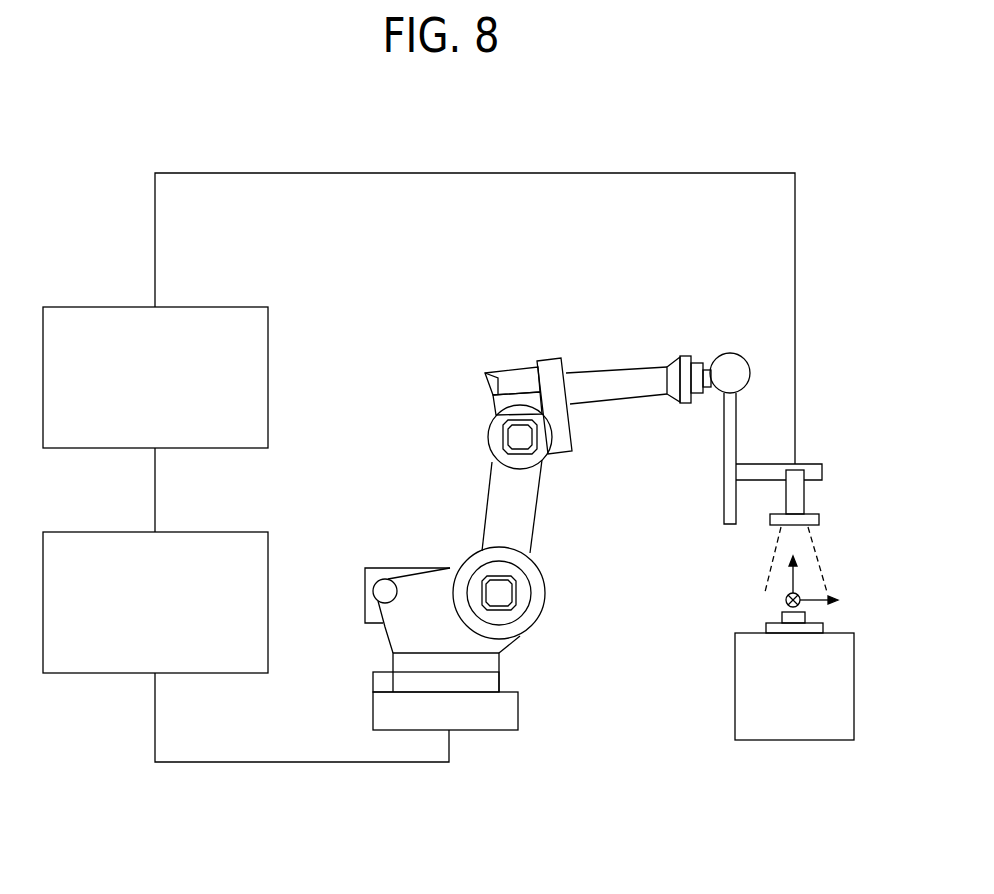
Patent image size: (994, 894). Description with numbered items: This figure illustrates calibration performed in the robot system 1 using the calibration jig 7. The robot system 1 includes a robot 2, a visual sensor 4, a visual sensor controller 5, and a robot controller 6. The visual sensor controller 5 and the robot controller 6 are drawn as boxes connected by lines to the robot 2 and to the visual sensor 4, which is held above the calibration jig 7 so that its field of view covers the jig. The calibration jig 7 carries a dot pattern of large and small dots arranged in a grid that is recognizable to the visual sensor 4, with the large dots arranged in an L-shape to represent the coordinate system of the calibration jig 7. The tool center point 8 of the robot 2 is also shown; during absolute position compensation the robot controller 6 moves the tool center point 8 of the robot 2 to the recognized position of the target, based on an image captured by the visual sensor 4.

The robot system 1 is at (852, 220).
The robot 2 is at (425, 568).
The visual sensor 4 is at (804, 497).
The visual sensor controller 5 is at (202, 307).
The robot controller 6 is at (202, 532).
The calibration jig 7 is at (805, 617).
The tool center point 8 is at (724, 457).